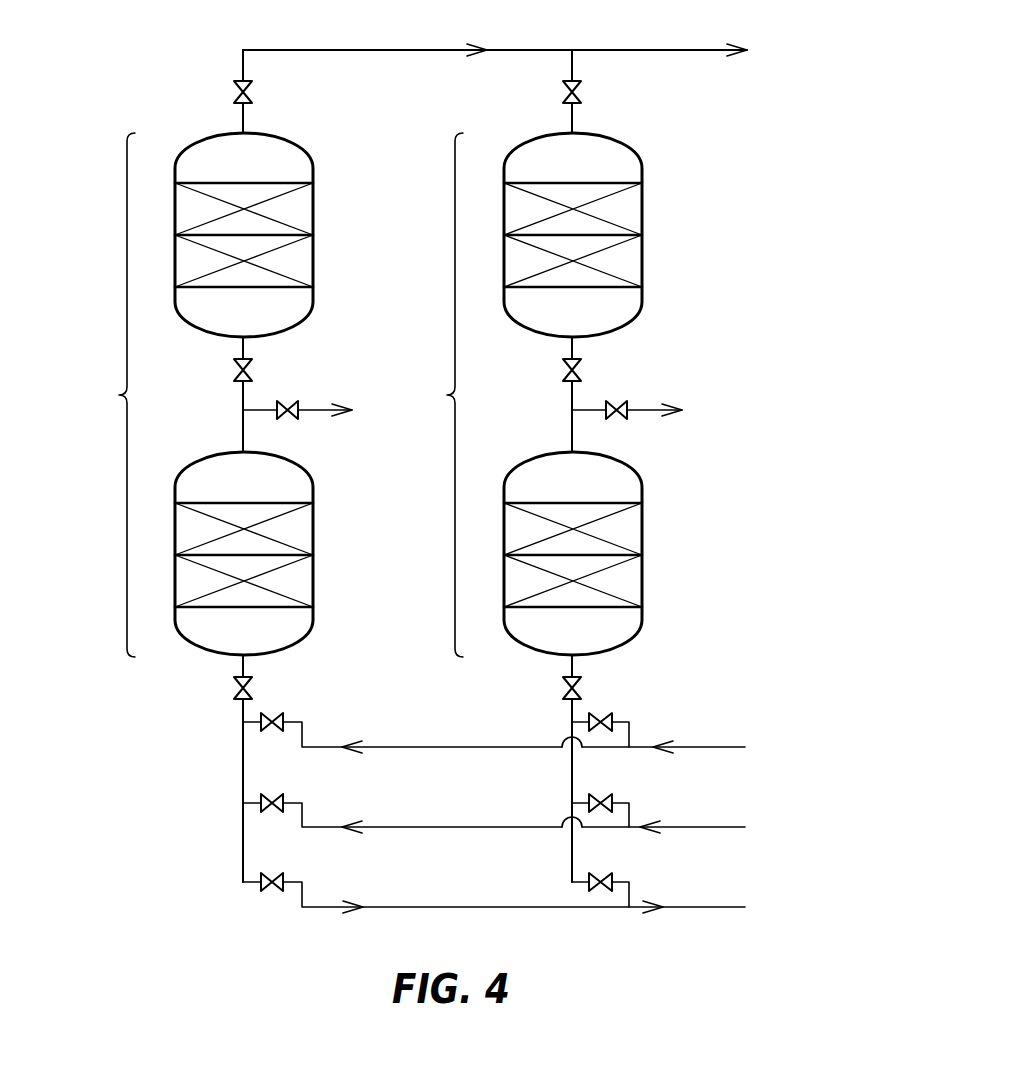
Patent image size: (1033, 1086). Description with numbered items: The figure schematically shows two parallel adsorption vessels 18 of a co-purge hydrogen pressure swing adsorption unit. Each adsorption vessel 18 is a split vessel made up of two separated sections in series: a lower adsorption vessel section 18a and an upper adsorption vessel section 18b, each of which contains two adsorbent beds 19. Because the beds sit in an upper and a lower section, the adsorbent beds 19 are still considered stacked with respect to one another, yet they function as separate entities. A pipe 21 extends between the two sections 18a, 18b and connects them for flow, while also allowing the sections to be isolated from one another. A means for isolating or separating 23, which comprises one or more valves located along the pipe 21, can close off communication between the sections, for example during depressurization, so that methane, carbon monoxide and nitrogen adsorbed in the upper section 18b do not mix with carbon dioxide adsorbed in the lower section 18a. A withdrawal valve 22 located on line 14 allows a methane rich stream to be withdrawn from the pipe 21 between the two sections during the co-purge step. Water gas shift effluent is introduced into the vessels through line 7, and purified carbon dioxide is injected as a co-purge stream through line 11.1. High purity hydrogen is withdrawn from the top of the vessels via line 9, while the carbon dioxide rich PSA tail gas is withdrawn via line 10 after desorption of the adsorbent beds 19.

The line that introduces water gas shift effluent 7 is at (385, 747).
The line by which high purity hydrogen is withdrawn 9 is at (400, 50).
The line through which the pressure swing adsorption tail gas is withdrawn 10 is at (377, 907).
The line by which the purified stream of carbon dioxide is injected 11.1 is at (385, 827).
The line by which a methane rich stream is withdrawn 14 is at (320, 410).
The adsorption vessel 18 is at (122, 180).
The first section of the adsorption vessel 18a is at (175, 555).
The second section of the adsorption vessel 18b is at (175, 235).
The adsorbent bed 19 is at (313, 250).
The pipe 21 is at (243, 433).
The withdrawal valve 22 is at (292, 419).
The means for isolating or separating 23 is at (234, 365).